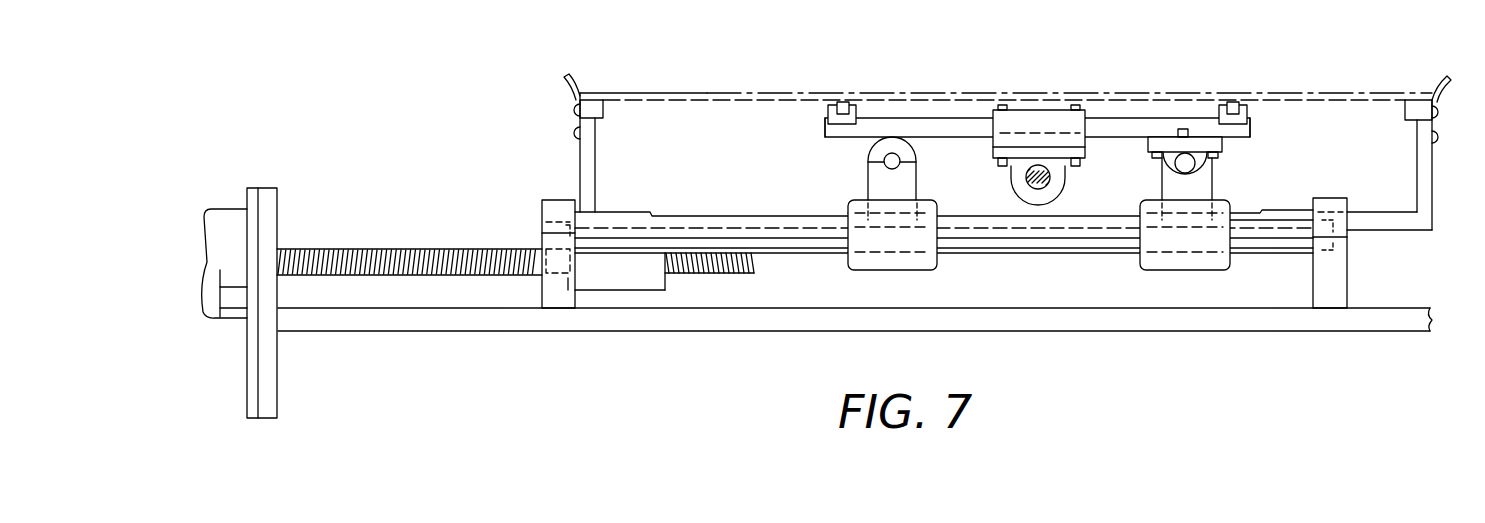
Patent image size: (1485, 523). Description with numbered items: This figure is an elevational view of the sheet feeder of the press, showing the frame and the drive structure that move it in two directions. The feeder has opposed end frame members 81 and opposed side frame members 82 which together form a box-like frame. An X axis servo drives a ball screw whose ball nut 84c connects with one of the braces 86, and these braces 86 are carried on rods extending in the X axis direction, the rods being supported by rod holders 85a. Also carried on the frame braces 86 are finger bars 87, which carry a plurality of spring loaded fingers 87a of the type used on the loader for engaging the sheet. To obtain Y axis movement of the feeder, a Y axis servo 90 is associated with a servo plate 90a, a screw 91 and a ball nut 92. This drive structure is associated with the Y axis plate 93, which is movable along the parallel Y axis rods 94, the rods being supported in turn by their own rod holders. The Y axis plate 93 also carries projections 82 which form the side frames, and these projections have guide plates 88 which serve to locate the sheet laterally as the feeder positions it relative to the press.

The end frame member 81 is at (478, 323).
The side frame member 82 is at (587, 163).
The ball nut 84c is at (1019, 184).
The rod holder 85a is at (873, 176).
The brace 86 is at (973, 127).
The finger bar 87 is at (826, 116).
The spring loaded finger 87a is at (843, 102).
The guide plate 88 is at (566, 85).
The Y axis servo 90 is at (230, 312).
The servo plate 90a is at (255, 333).
The screw 91 is at (438, 273).
The ball nut 92 is at (653, 278).
The Y axis plate 93 is at (717, 178).
The Y axis rod 94 is at (1268, 248).